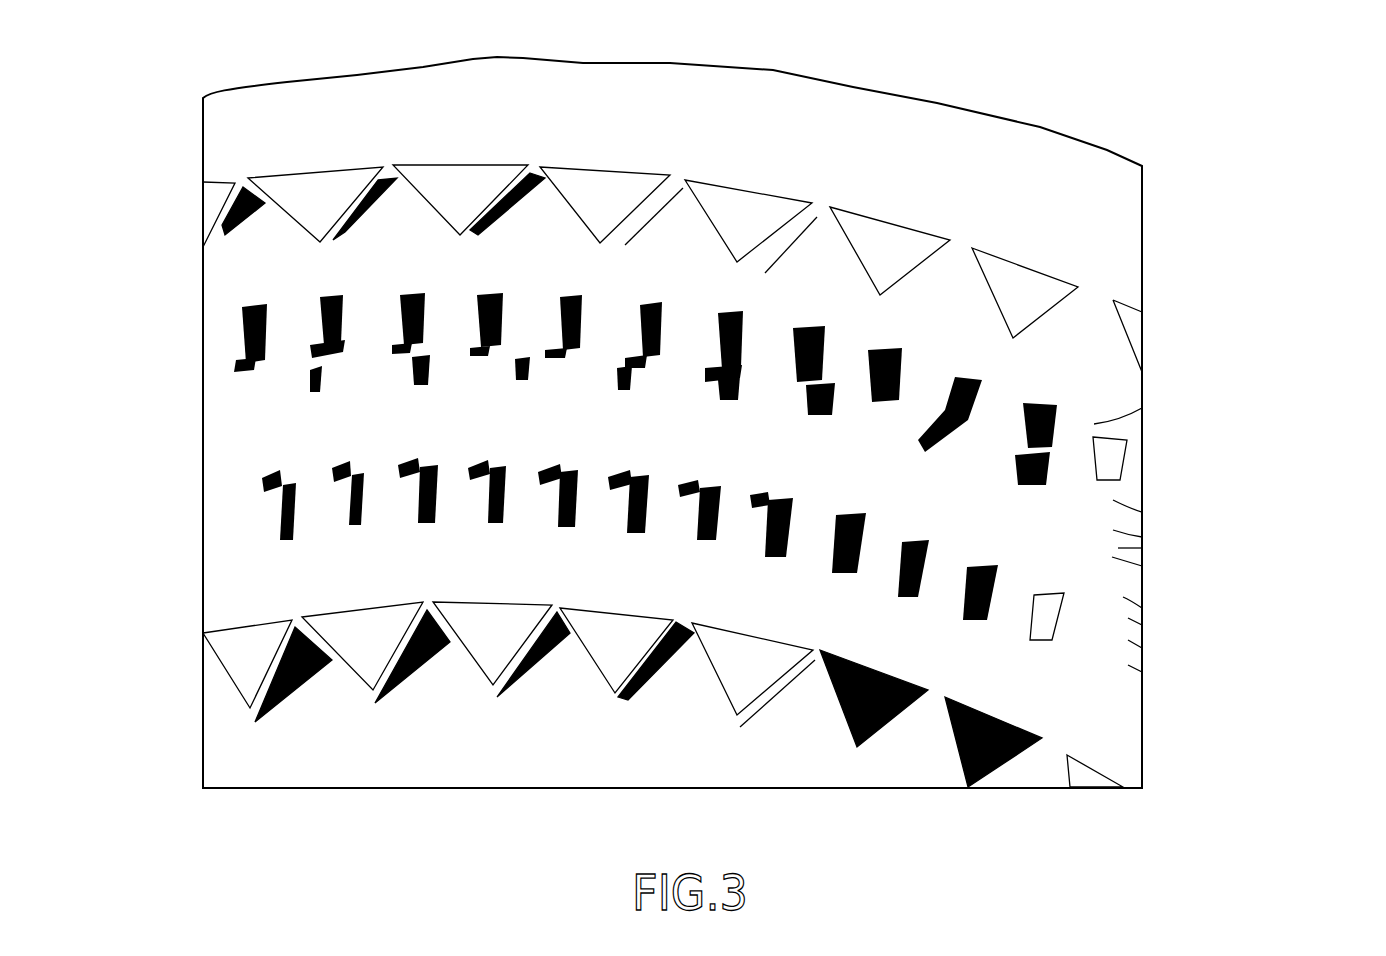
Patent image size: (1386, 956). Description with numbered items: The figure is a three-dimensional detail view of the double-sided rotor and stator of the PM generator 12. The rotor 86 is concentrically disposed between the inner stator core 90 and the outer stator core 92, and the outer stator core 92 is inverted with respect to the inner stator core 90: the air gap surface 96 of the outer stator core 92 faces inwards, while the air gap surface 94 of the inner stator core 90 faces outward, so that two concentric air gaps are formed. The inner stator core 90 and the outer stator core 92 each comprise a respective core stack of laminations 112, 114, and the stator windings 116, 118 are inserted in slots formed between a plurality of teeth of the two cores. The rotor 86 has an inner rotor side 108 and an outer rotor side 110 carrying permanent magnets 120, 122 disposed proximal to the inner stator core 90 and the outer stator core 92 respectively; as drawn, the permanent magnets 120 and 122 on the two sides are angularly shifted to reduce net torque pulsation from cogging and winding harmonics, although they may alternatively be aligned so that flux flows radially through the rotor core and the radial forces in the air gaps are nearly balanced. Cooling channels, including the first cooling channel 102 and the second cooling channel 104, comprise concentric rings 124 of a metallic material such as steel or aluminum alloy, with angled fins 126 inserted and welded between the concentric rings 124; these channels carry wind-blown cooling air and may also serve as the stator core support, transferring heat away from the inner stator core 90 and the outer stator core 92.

The PM generator 12 is at (1274, 119).
The rotor 86 is at (1143, 565).
The inner stator core 90 is at (1190, 697).
The outer stator core 92 is at (1163, 474).
The air gap surface of the inner stator core 94 is at (203, 492).
The air gap surface of the outer stator core 96 is at (203, 385).
The first cooling channel 102 is at (1143, 336).
The second cooling channel 104 is at (1085, 790).
The inner rotor side 108 is at (1143, 601).
The outer rotor side 110 is at (1143, 548).
The core stack of laminations 112 is at (1143, 645).
The core stack of laminations 114 is at (1143, 507).
The inner stator winding 116 is at (1143, 670).
The outer stator winding 118 is at (1143, 408).
The permanent magnets of the inner rotor side 120 is at (1143, 623).
The permanent magnets of the outer rotor side 122 is at (1143, 533).
The concentric rings 124 is at (250, 257).
The angled fins 126 is at (203, 207).